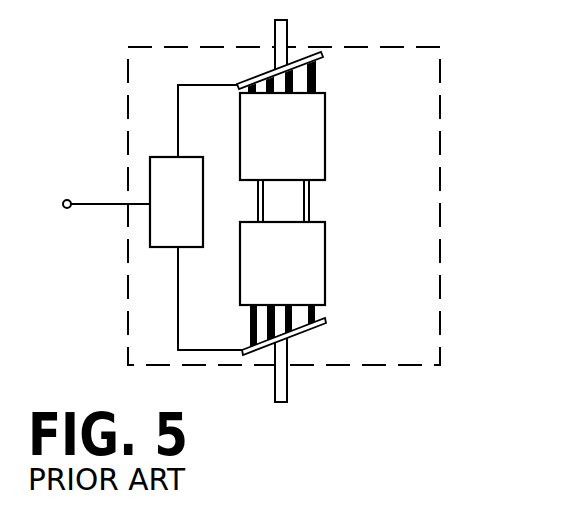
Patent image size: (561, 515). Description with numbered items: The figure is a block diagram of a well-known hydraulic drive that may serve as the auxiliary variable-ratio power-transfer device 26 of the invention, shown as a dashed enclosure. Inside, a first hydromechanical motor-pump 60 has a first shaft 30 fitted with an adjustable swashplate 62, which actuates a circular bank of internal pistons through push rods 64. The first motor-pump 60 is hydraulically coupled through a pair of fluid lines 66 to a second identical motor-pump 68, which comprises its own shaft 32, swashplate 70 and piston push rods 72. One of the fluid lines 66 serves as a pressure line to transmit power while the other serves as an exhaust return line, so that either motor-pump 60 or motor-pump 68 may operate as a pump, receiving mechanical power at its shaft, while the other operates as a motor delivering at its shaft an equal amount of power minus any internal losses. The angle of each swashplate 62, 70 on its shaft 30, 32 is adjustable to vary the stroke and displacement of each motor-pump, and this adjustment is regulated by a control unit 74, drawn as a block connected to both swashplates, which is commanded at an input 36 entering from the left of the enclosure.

The auxiliary variable-ratio power-transfer device 26 is at (440, 106).
The first shaft 30 is at (288, 30).
The shaft 32 is at (288, 385).
The input 36 is at (89, 203).
The first hydromechanical motor-pump 60 is at (325, 138).
The adjustable swashplate 62 is at (323, 57).
The push rods 64 is at (322, 88).
The fluid lines 66 is at (268, 202).
The second motor-pump 68 is at (325, 257).
The swashplate 70 is at (326, 325).
The piston push rods 72 is at (322, 311).
The control unit 74 is at (150, 240).